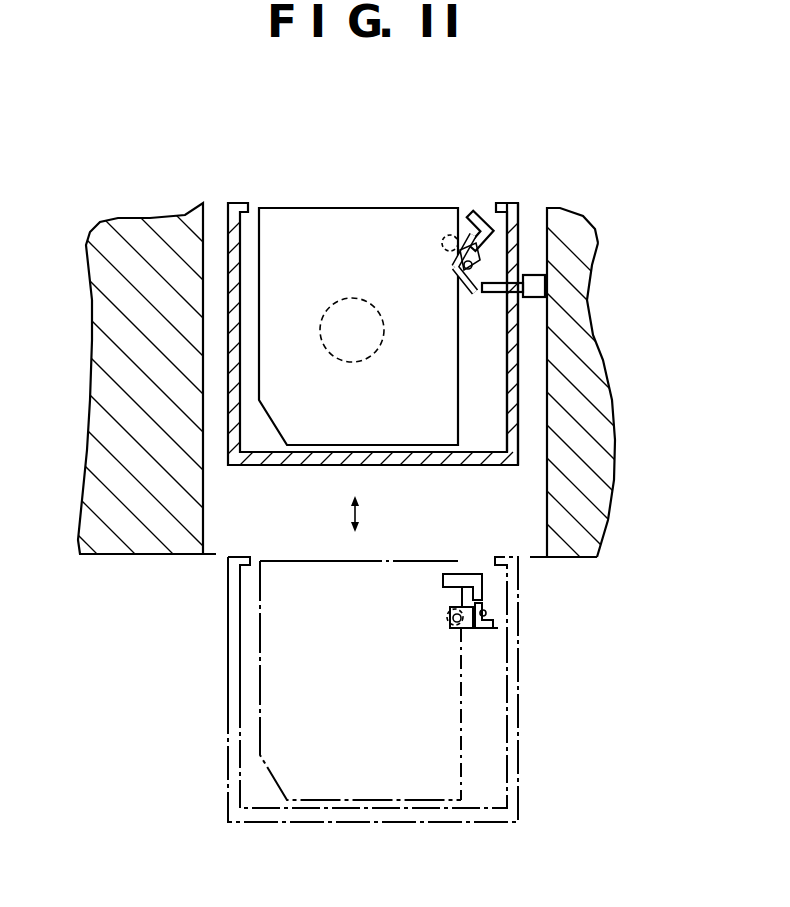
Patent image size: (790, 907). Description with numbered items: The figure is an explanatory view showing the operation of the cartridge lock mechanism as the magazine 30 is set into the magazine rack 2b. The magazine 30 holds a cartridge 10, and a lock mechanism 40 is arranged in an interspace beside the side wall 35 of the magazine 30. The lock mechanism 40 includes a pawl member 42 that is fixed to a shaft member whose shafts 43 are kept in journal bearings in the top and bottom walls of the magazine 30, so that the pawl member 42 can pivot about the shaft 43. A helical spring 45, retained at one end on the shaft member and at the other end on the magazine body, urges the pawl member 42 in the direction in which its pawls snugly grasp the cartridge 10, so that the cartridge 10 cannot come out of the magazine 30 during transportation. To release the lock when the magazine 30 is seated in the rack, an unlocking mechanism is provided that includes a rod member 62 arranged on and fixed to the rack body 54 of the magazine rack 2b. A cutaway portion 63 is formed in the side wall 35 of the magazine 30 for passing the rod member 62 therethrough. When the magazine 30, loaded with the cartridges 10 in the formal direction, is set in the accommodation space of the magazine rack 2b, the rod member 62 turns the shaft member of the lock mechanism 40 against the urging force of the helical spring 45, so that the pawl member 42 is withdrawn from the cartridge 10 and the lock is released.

The magazine rack 2b is at (583, 483).
The rack body 54 is at (597, 527).
The magazine 30 is at (230, 222).
The side wall 35 is at (510, 378).
The cutaway portion 63 is at (513, 240).
The cartridge 10 is at (345, 222).
The lock mechanism 40 is at (467, 203).
The pawl member 42 is at (478, 214).
The shaft 43 is at (447, 252).
The helical spring 45 is at (478, 262).
The rod member 62 is at (535, 288).